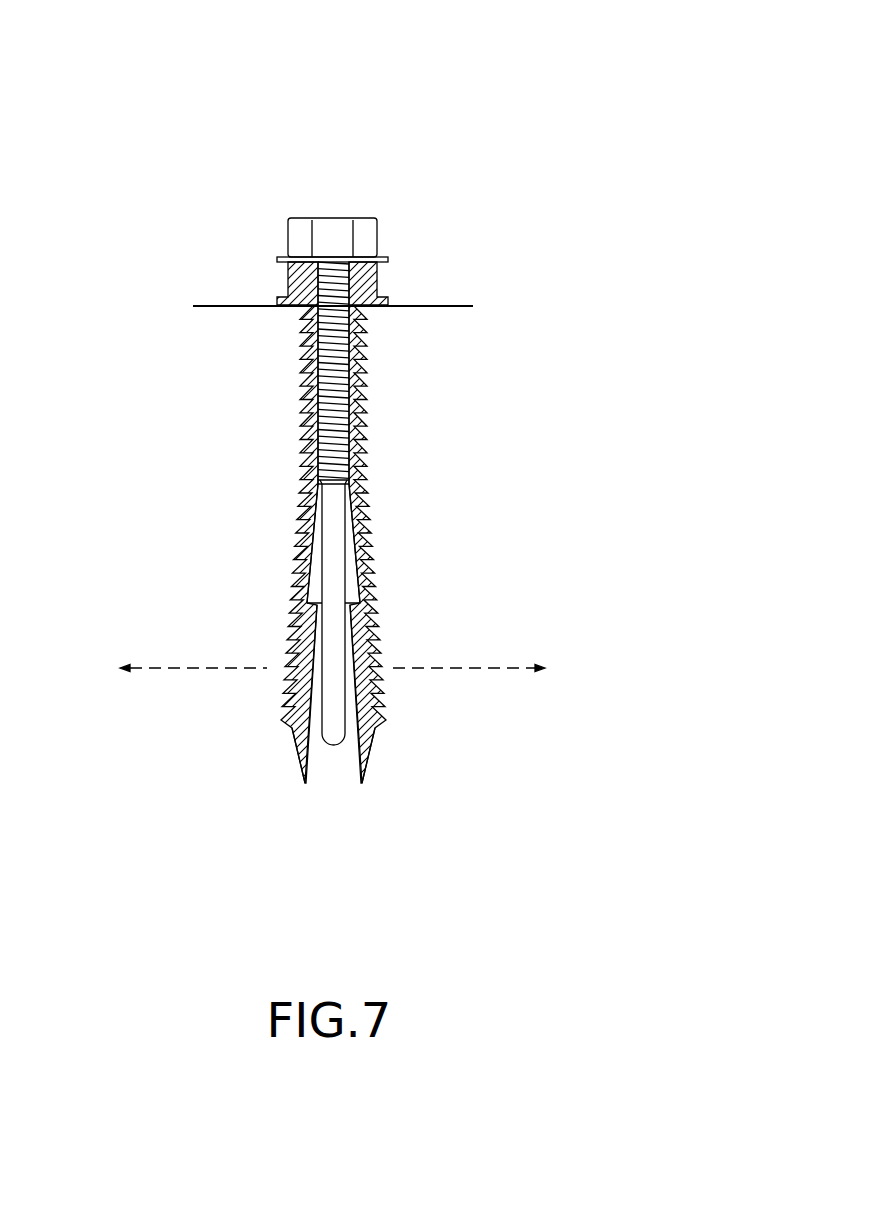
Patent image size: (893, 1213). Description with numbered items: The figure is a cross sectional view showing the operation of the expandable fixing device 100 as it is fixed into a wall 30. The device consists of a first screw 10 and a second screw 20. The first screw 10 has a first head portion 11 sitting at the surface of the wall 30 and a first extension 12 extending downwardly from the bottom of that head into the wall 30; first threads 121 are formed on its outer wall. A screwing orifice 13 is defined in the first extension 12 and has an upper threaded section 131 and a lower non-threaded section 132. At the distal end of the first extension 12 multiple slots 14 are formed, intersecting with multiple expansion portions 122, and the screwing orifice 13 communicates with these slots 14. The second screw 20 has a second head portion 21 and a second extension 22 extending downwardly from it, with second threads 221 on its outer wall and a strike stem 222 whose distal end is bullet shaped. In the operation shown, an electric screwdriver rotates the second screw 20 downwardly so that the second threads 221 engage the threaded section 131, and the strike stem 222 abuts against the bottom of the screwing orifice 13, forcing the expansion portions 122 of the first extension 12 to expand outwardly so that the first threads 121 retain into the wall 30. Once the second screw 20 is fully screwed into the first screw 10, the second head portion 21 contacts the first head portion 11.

The expandable fixing device 100 is at (97, 57).
The first screw 10 is at (272, 283).
The first head portion 11 is at (372, 283).
The first extension 12 is at (338, 544).
The first threads 121 is at (305, 350).
The expansion portions 122 is at (282, 708).
The screwing orifice 13 is at (353, 530).
The threaded section 131 is at (363, 448).
The non-threaded section 132 is at (348, 565).
The slots 14 is at (303, 663).
The second screw 20 is at (411, 238).
The second head portion 21 is at (330, 227).
The second extension 22 is at (340, 540).
The second threads 221 is at (367, 397).
The strike stem 222 is at (343, 750).
The wall 30 is at (445, 443).